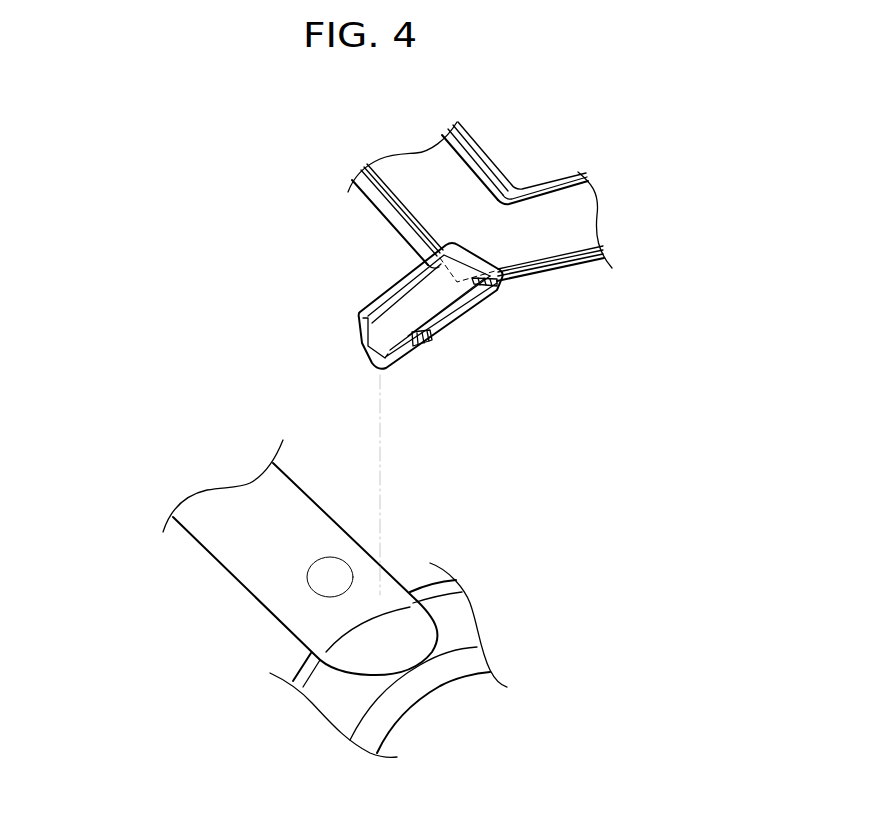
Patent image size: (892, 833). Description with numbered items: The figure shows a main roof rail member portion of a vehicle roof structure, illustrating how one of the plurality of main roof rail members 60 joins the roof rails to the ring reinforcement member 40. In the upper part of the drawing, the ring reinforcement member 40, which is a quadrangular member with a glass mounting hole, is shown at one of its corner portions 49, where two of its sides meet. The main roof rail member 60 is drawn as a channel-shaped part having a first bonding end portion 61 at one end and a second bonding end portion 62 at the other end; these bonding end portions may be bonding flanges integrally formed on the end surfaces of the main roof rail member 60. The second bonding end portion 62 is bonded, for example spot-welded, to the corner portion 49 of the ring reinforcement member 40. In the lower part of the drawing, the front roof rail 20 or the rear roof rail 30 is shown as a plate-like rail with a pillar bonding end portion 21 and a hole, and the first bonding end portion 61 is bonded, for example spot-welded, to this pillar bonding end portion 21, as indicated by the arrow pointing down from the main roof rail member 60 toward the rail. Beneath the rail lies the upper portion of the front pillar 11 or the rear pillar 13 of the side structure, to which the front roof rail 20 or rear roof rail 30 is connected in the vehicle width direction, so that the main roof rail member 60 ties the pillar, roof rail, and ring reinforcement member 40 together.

The ring reinforcement member 40 is at (368, 220).
The corner portion 49 is at (480, 238).
The main roof rail member 60 is at (466, 324).
The first bonding end portion 61 is at (390, 328).
The second bonding end portion 62 is at (498, 281).
The front roof rail 20 is at (245, 557).
The rear roof rail 30 is at (222, 590).
The pillar bonding end portion 21 is at (447, 488).
The front pillar 11 is at (405, 670).
The rear pillar 13 is at (350, 704).